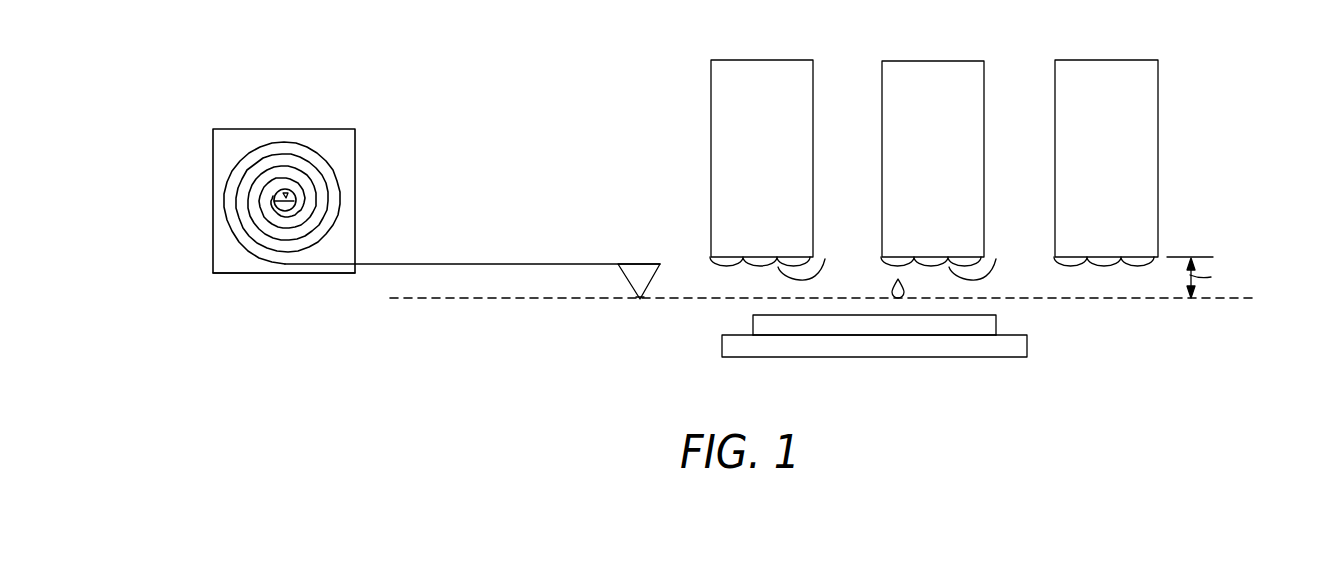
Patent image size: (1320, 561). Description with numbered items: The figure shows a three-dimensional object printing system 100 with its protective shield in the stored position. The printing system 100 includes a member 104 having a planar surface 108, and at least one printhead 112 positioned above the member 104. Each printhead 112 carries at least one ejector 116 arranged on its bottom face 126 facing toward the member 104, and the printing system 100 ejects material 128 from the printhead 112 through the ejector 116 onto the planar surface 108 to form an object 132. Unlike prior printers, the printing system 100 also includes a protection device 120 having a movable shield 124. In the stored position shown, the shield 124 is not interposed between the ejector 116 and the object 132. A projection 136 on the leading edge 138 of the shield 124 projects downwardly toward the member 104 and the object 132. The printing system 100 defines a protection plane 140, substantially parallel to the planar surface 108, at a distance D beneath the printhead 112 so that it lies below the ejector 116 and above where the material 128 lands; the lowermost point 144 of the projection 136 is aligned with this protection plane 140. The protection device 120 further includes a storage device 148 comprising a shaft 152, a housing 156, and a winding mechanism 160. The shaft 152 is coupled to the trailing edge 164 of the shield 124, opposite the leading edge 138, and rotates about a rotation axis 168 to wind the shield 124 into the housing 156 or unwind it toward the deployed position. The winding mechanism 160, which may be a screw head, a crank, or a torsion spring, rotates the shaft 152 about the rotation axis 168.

The three-dimensional object printing system 100 is at (489, 72).
The member 104 is at (743, 348).
The planar surface 108 is at (1017, 332).
The printhead 112 is at (768, 75).
The ejector 116 is at (790, 257).
The protection device 120 is at (280, 109).
The shield 124 is at (452, 264).
The bottom face 126 is at (849, 258).
The material 128 is at (891, 292).
The object 132 is at (983, 328).
The projection 136 is at (642, 276).
The leading edge 138 is at (618, 264).
The protection plane 140 is at (1237, 297).
The lowermost point 144 is at (640, 299).
The storage device 148 is at (271, 285).
The shaft 152 is at (292, 192).
The housing 156 is at (355, 219).
The winding mechanism 160 is at (300, 200).
The trailing edge 164 is at (277, 207).
The rotation axis 168 is at (283, 192).